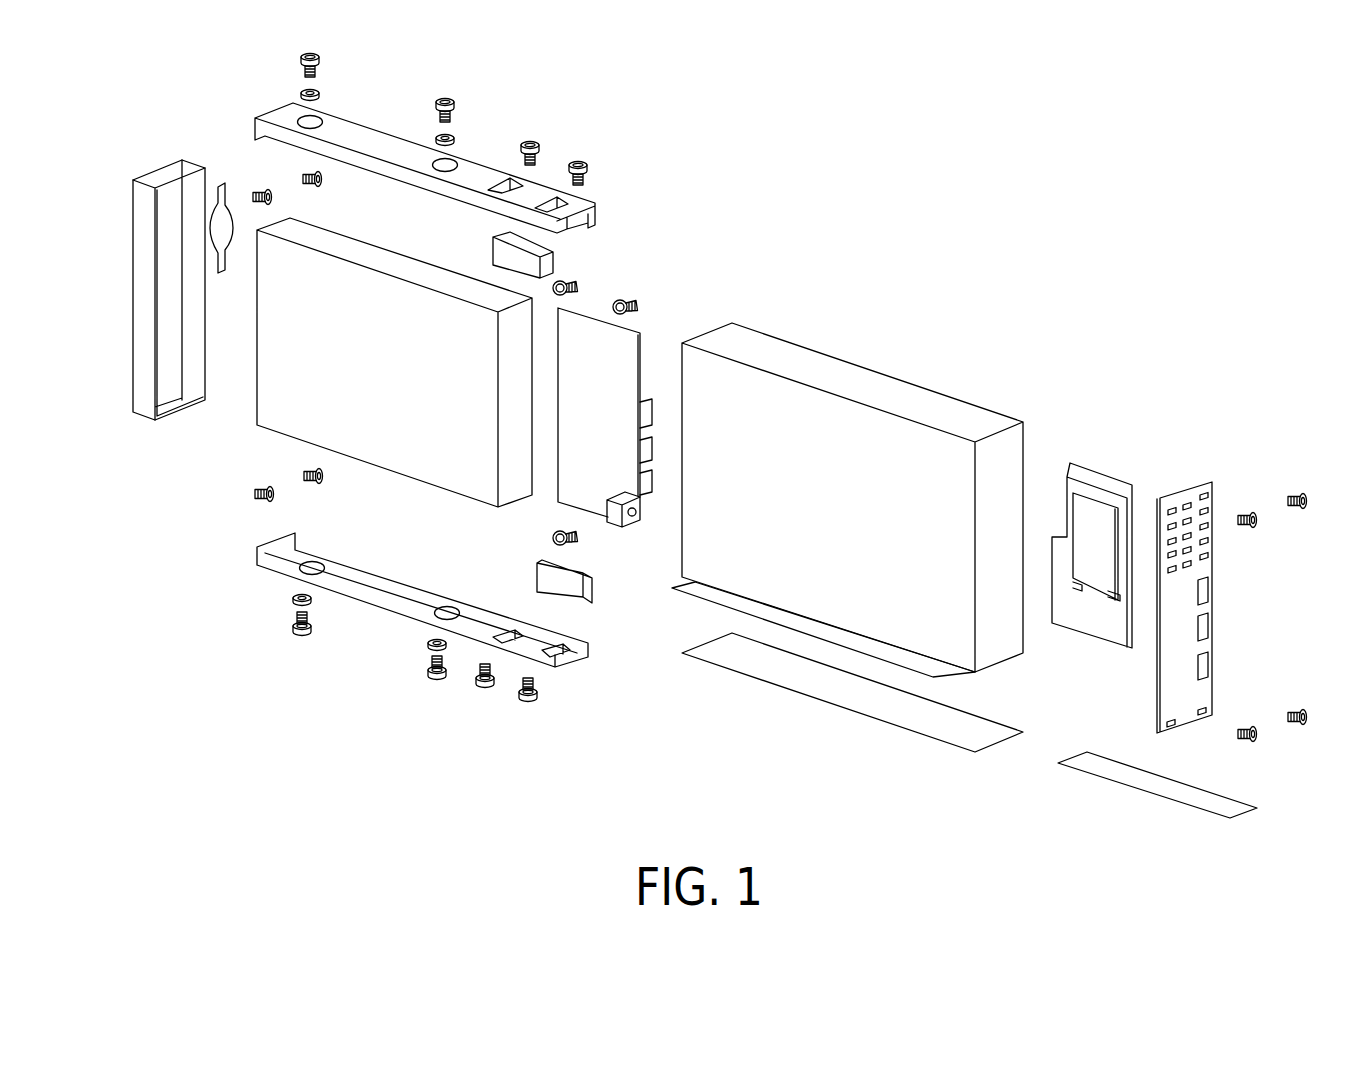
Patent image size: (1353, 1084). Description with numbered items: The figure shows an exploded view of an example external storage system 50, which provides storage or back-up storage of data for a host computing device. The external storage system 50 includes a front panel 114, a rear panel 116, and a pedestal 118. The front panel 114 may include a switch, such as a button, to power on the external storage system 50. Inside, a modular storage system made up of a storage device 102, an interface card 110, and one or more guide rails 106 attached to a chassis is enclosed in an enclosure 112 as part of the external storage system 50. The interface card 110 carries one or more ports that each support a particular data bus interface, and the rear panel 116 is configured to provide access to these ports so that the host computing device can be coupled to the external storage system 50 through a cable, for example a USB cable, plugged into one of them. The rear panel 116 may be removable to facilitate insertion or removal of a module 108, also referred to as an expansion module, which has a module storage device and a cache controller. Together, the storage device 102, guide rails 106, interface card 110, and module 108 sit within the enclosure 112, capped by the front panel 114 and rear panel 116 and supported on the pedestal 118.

The external storage system 50 is at (857, 216).
The storage device 102 is at (328, 427).
The guide rail 106 is at (545, 260).
The module 108 is at (1102, 473).
The interface card 110 is at (628, 345).
The enclosure 112 is at (907, 393).
The front panel 114 is at (177, 412).
The rear panel 116 is at (1193, 492).
The pedestal 118 is at (813, 688).